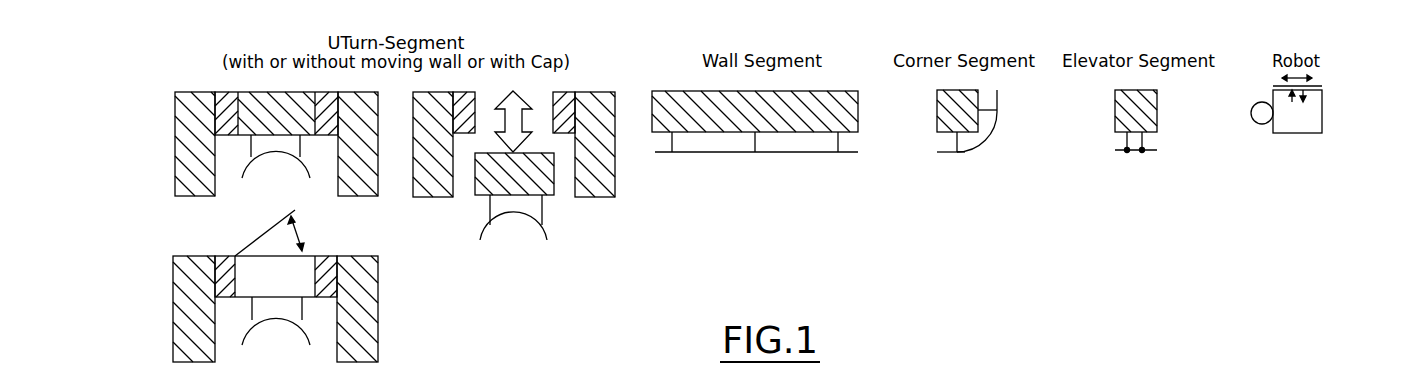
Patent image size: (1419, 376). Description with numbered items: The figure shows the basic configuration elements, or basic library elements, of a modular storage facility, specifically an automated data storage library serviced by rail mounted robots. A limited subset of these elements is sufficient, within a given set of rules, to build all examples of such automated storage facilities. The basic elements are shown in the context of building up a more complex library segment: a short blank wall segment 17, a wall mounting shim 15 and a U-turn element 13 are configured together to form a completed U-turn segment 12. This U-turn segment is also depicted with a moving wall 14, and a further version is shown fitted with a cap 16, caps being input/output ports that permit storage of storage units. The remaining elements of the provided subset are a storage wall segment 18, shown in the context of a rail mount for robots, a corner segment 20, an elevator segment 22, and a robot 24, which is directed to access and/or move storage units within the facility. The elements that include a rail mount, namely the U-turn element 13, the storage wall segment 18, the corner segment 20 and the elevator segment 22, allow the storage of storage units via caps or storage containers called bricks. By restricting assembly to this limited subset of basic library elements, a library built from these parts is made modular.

The U-turn segment 12 is at (210, 196).
The U-turn element 13 is at (547, 231).
The moving wall 14 is at (595, 197).
The wall mounting shim 15 is at (466, 92).
The cap 16 is at (378, 342).
The short blank wall segment 17 is at (413, 168).
The storage wall segment 18 is at (858, 110).
The corner segment 20 is at (987, 140).
The elevator segment 22 is at (1157, 110).
The robot 24 is at (1298, 133).